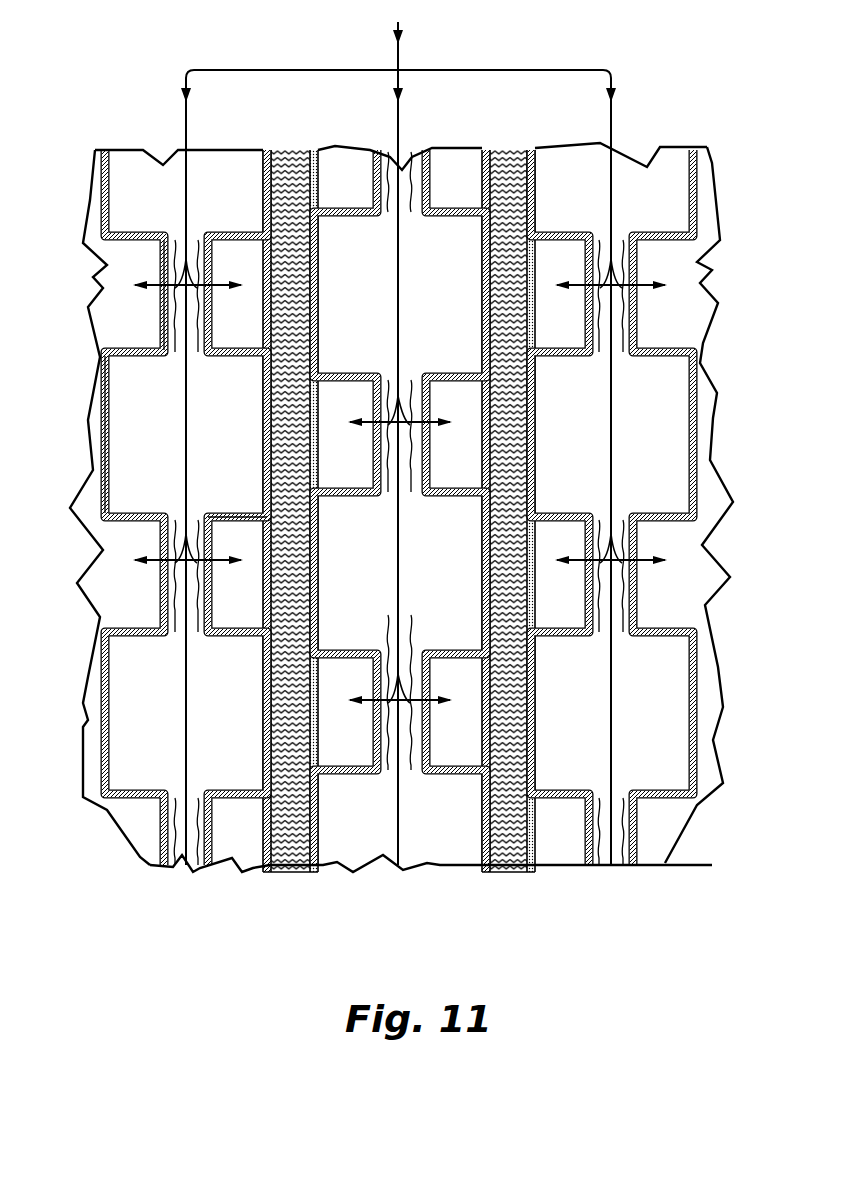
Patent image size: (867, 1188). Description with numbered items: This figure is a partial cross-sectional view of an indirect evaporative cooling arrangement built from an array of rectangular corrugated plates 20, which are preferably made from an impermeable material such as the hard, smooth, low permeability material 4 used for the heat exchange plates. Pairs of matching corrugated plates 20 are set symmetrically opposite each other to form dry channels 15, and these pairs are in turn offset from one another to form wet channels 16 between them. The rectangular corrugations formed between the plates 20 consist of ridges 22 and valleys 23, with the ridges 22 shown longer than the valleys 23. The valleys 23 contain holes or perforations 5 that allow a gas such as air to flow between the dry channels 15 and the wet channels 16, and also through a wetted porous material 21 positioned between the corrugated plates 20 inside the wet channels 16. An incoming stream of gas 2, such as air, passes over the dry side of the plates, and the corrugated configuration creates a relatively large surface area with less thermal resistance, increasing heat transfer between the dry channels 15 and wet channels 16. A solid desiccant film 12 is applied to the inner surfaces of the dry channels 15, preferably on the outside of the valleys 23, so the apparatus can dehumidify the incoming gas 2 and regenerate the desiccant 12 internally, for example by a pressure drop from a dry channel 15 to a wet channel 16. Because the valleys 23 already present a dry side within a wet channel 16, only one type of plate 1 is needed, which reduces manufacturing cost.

The insulated post with zigzag core 1 is at (320, 152).
The incoming stream of gas 2 is at (395, 27).
The low permeability material 4 is at (252, 496).
The holes or perforations 5 is at (160, 295).
The solid desiccant film 12 is at (205, 545).
The dry channels 15 is at (663, 462).
The wet channels 16 is at (215, 605).
The corrugated plates 20 is at (455, 845).
The porous material 21 is at (530, 700).
The ridges 22 is at (88, 405).
The valleys 23 is at (148, 328).